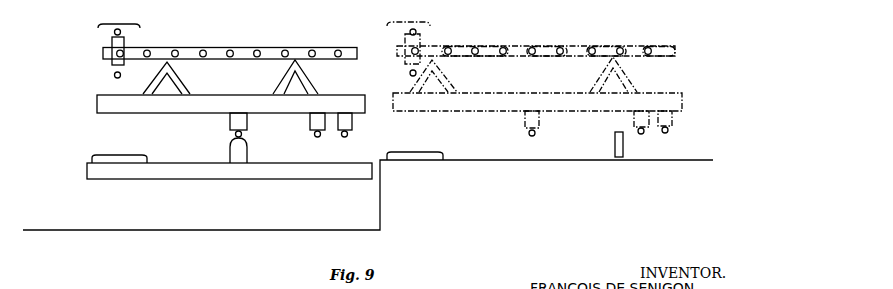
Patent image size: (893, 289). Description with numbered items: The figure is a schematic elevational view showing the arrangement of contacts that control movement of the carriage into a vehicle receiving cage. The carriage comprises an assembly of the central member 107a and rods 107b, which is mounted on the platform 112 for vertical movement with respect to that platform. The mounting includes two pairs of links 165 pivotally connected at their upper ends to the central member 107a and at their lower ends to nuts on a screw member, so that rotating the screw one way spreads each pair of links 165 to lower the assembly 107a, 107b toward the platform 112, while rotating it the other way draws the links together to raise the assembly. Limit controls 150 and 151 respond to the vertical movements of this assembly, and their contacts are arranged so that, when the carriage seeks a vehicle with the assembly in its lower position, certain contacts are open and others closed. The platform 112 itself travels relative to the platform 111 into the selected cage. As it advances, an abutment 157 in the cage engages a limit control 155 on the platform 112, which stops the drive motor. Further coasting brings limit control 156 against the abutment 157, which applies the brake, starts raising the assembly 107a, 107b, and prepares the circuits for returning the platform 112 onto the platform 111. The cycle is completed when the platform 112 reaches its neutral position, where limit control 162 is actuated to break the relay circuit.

The central member 107a is at (217, 52).
The rods 107b is at (300, 52).
The platform 111 is at (103, 172).
The platform 112 is at (113, 108).
The limit control 150 is at (112, 43).
The limit control 151 is at (111, 67).
The limit control 155 is at (343, 133).
The limit control 156 is at (310, 124).
The abutment 157 is at (615, 145).
The limit control 162 is at (233, 137).
The links 165 is at (280, 84).